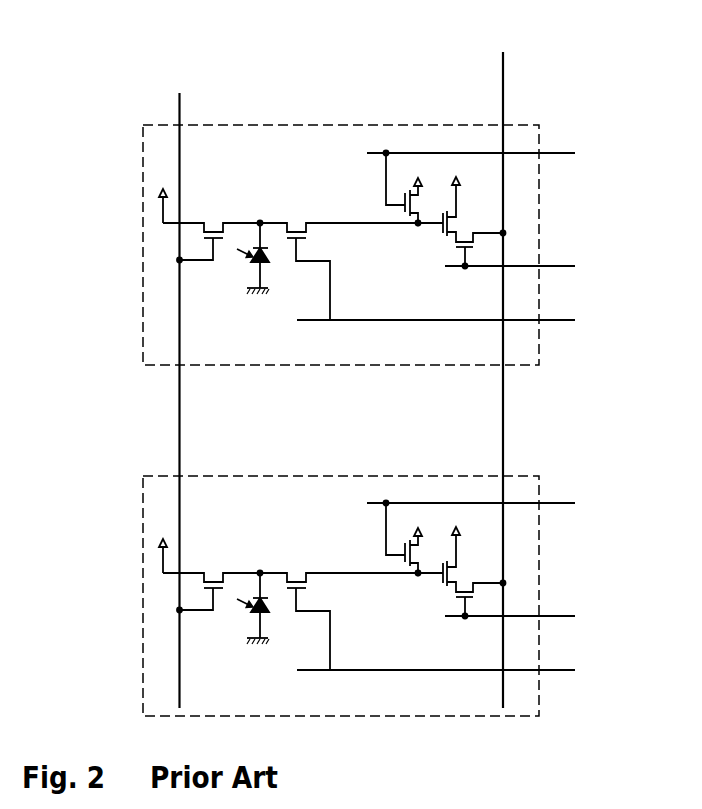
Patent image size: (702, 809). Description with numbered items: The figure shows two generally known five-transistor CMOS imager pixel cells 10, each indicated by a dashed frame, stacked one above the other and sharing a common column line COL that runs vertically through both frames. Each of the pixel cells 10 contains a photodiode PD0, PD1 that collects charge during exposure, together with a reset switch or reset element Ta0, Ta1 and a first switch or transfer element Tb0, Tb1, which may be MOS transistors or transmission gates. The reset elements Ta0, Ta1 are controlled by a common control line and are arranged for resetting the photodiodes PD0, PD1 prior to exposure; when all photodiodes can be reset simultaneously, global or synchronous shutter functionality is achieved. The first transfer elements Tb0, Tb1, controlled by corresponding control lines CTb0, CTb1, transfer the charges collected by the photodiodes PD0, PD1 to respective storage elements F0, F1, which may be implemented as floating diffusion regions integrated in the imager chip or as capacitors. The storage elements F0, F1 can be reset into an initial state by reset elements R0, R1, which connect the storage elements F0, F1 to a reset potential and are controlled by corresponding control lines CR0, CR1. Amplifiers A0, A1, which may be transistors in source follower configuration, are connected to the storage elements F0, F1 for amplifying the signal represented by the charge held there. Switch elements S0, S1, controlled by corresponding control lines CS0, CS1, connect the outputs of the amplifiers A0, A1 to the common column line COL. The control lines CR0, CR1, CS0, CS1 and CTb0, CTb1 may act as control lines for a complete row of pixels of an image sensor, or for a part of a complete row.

The pixel cell 10 is at (138, 260).
The common column line COL is at (504, 367).
The reset element Ta0 is at (215, 222).
The first transfer element Tb0 is at (298, 222).
The photodiode PD0 is at (247, 267).
The reset element R0 is at (397, 208).
The storage element F0 is at (413, 233).
The amplifier A0 is at (453, 222).
The switch element S0 is at (474, 250).
The control line CR0 is at (495, 153).
The control line CS0 is at (533, 266).
The control line CTb0 is at (466, 321).
The reset element Ta1 is at (215, 572).
The first transfer element Tb1 is at (298, 572).
The photodiode PD1 is at (247, 618).
The reset element R1 is at (397, 559).
The storage element F1 is at (413, 583).
The amplifier A1 is at (453, 572).
The switch element S1 is at (474, 600).
The control line CR1 is at (495, 503).
The control line CS1 is at (533, 616).
The control line CTb1 is at (466, 671).